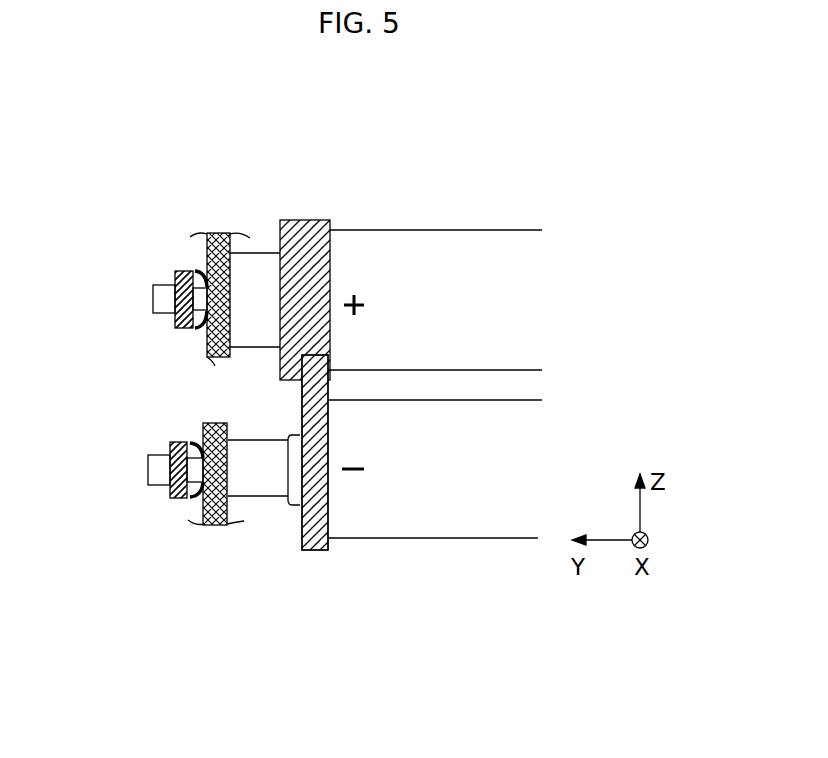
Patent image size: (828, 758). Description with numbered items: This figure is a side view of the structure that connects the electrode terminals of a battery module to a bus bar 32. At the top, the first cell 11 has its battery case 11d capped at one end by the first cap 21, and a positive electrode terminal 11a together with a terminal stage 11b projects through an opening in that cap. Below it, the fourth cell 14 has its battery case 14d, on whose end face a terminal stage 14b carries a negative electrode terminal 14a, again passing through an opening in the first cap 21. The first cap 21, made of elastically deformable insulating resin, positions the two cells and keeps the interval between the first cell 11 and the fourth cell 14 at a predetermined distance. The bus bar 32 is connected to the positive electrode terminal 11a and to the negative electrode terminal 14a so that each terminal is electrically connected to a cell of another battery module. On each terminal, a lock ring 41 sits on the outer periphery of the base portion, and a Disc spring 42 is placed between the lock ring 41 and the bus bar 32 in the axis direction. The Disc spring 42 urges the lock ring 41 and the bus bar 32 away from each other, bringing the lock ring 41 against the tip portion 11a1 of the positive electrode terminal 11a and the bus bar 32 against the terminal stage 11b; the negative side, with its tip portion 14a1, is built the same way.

The first cap 21 is at (310, 232).
The first cell 11 is at (459, 315).
The fourth cell 14 is at (459, 486).
The battery case 11d is at (441, 229).
The battery case 14d is at (440, 540).
The terminal stage 11b is at (256, 277).
The terminal stage 14b is at (258, 483).
The bus bar 32 is at (212, 423).
The lock ring 41 is at (178, 271).
The Disc spring 42 is at (198, 272).
The tip portion 11a1 is at (157, 300).
The positive electrode terminal 11a is at (137, 316).
The tip portion 14a1 is at (152, 470).
The negative electrode terminal 14a is at (136, 487).